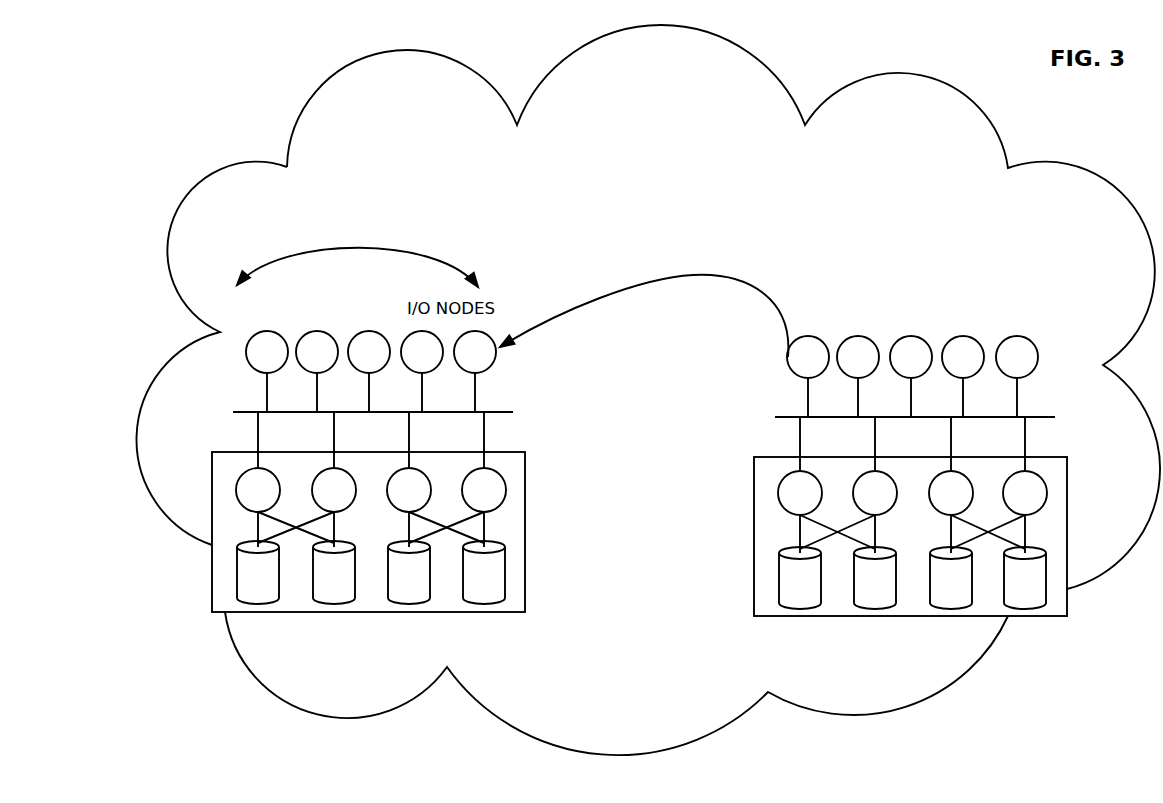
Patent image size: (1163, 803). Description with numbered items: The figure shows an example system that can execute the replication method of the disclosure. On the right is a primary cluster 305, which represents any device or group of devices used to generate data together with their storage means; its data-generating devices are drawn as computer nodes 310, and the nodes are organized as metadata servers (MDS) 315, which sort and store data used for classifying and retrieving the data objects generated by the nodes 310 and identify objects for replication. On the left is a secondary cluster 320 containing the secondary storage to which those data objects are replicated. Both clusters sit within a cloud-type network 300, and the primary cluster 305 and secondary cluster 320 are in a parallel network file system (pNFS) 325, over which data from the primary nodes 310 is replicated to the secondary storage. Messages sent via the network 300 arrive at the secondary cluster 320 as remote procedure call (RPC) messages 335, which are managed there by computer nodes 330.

The network 300 is at (663, 410).
The primary cluster 305 is at (818, 648).
The computer nodes 310 is at (898, 365).
The metadata servers (MDS) 315 is at (795, 365).
The secondary cluster 320 is at (290, 634).
The parallel network file system (pNFS) 325 is at (650, 310).
The computer nodes 330 is at (254, 360).
The remote procedure call (RPC) messages 335 is at (333, 257).